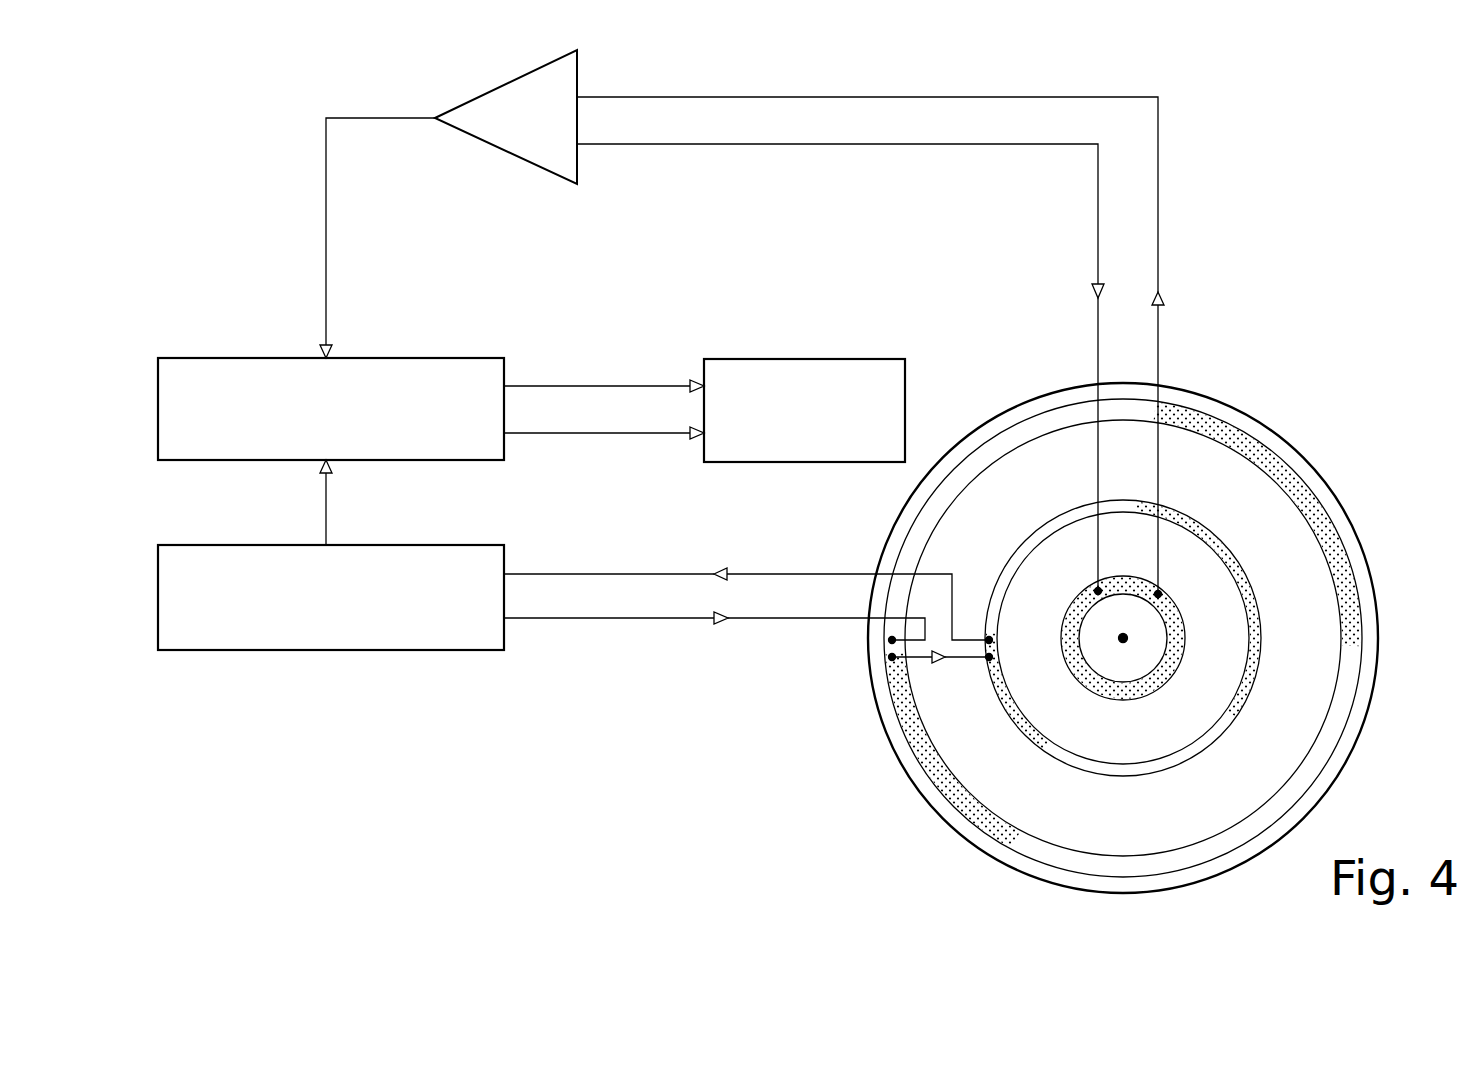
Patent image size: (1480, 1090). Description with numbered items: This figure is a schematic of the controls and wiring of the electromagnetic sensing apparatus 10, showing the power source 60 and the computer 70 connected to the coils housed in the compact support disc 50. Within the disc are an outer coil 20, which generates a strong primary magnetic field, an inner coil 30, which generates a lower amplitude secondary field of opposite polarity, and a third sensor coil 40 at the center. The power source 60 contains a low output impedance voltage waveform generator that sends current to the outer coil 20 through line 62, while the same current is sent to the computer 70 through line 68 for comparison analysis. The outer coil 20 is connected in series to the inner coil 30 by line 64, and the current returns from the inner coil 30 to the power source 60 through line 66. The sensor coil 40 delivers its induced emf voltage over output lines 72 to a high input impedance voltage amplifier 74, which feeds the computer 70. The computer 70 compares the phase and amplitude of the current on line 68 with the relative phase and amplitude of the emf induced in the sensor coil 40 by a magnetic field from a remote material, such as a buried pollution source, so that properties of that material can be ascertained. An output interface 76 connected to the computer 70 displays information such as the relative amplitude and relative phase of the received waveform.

The electromagnetic sensing apparatus 10 is at (1275, 363).
The outer coil 20 is at (903, 735).
The inner coil 30 is at (1004, 710).
The sensor coil 40 is at (1180, 630).
The support disc 50 is at (1026, 476).
The power source 60 is at (421, 664).
The line 62 is at (668, 618).
The line 64 is at (958, 658).
The line 66 is at (780, 574).
The line 68 is at (326, 488).
The computer 70 is at (210, 358).
The output lines 72 is at (1010, 97).
The high input impedance voltage amplifier 74 is at (493, 90).
The output interface 76 is at (777, 359).